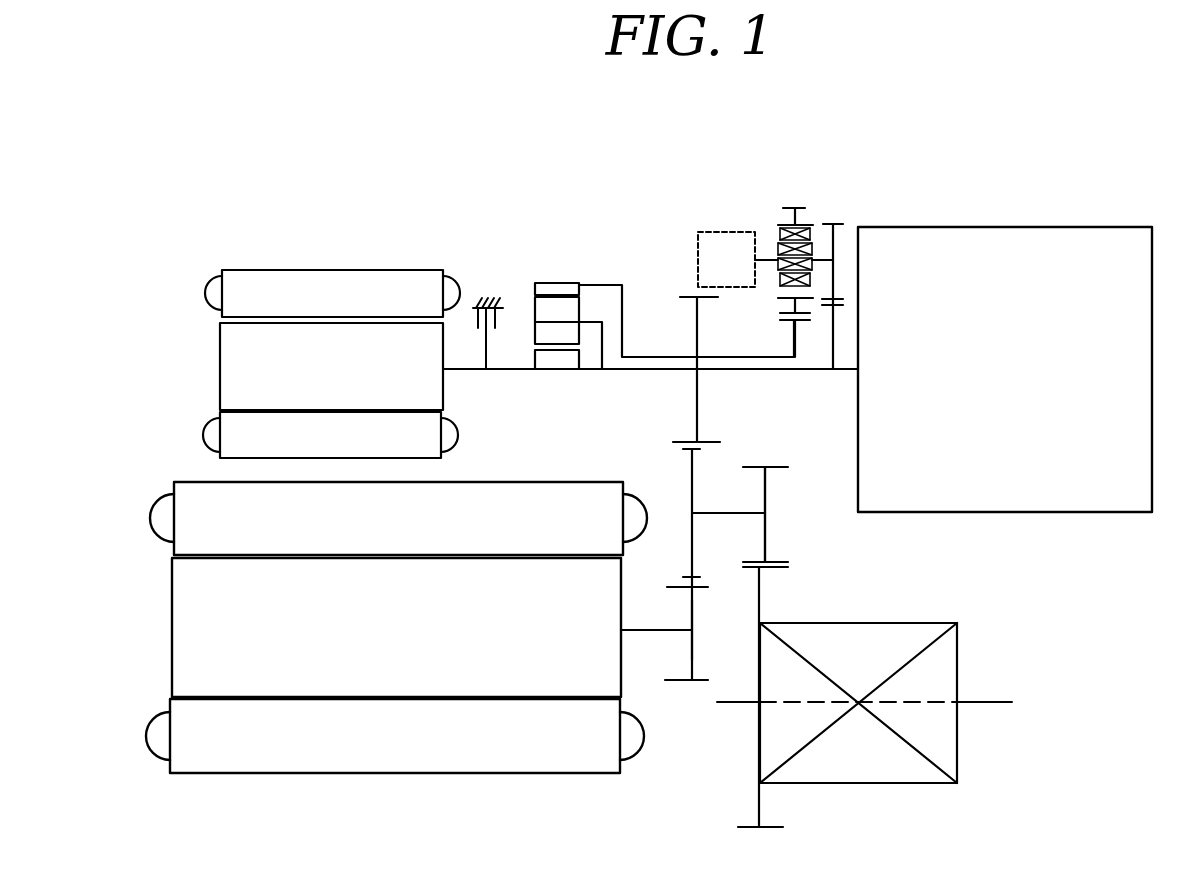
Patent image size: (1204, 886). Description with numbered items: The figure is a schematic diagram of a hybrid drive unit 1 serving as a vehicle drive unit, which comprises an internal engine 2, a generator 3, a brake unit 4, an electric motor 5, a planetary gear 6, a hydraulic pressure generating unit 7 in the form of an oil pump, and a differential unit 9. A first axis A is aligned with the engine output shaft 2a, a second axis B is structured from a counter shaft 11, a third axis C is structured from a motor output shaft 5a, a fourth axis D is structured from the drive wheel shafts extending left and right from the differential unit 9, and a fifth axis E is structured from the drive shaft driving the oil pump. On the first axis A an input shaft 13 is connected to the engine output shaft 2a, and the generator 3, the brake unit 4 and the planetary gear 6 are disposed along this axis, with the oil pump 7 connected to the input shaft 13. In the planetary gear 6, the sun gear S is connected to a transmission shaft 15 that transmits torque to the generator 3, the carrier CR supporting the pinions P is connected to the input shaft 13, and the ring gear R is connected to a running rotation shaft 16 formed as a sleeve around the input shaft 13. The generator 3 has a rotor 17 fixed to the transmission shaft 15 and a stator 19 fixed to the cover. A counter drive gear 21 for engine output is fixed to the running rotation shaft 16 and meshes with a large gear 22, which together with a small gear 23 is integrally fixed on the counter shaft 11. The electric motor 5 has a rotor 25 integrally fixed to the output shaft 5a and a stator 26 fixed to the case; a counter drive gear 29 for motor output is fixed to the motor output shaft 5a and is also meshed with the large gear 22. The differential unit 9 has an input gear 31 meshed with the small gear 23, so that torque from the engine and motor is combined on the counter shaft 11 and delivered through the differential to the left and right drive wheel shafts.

The hybrid drive unit 1 is at (580, 188).
The internal engine 2 is at (997, 228).
The engine output shaft 2a is at (849, 375).
The generator 3 is at (291, 324).
The brake unit 4 is at (488, 297).
The electric motor 5 is at (362, 637).
The motor output shaft 5a is at (648, 634).
The planetary gear 6 is at (557, 326).
The hydraulic pressure generating unit 7 is at (730, 228).
The differential unit 9 is at (920, 624).
The counter shaft 11 is at (712, 512).
The input shaft 13 is at (632, 372).
The transmission shaft 15 is at (497, 372).
The running rotation shaft 16 is at (647, 355).
The rotor 17 is at (220, 362).
The stator 19 is at (257, 268).
The counter drive gear 21 is at (712, 440).
The large gear 22 is at (685, 450).
The small gear 23 is at (757, 466).
The rotor 25 is at (172, 626).
The stator 26 is at (192, 480).
The counter drive gear 29 is at (703, 684).
The input gear 31 is at (771, 570).
The first axis A is at (782, 376).
The second axis B is at (770, 503).
The third axis C is at (697, 660).
The fourth axis D is at (720, 708).
The fifth axis E is at (838, 262).
The ring gear R is at (535, 288).
The pinions P is at (534, 308).
The sun gear S is at (534, 370).
The carrier CR is at (601, 372).